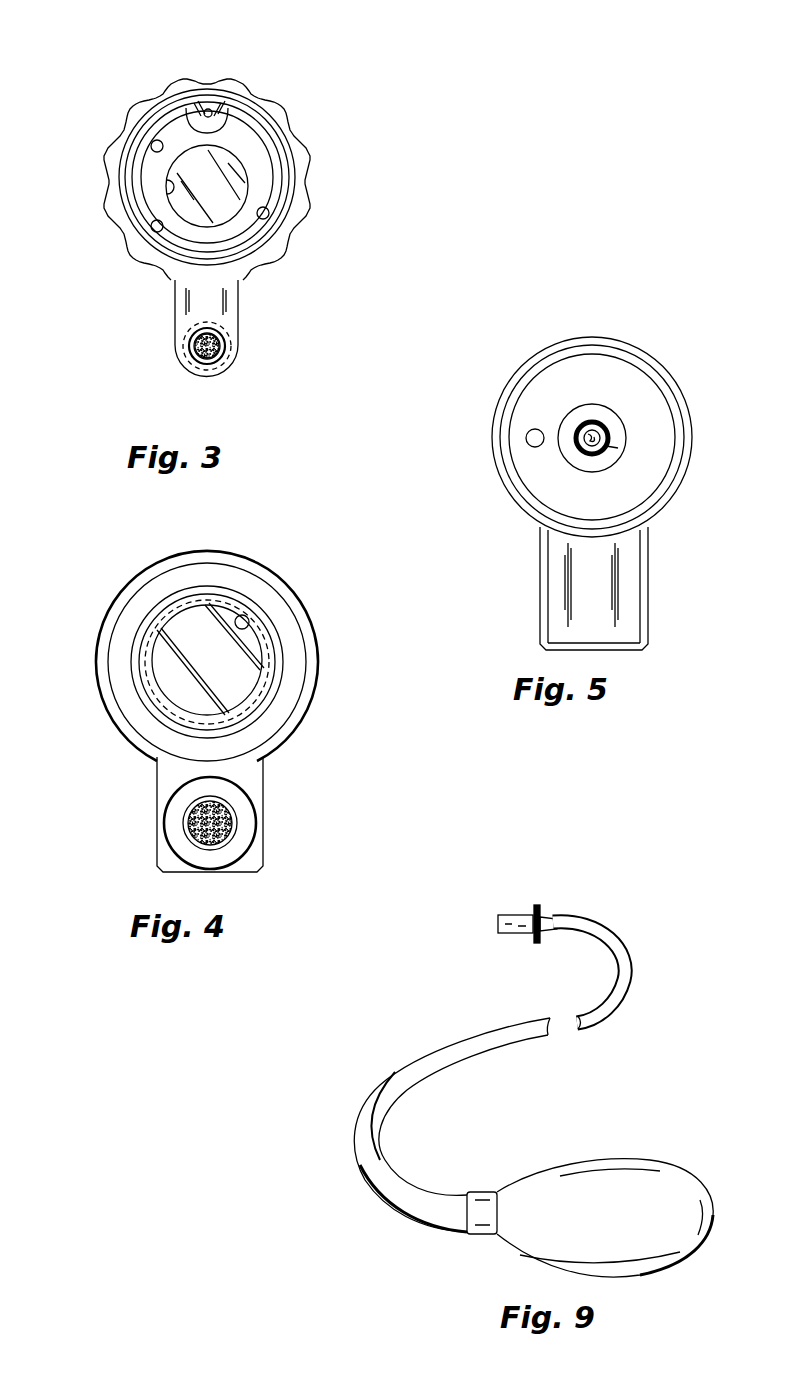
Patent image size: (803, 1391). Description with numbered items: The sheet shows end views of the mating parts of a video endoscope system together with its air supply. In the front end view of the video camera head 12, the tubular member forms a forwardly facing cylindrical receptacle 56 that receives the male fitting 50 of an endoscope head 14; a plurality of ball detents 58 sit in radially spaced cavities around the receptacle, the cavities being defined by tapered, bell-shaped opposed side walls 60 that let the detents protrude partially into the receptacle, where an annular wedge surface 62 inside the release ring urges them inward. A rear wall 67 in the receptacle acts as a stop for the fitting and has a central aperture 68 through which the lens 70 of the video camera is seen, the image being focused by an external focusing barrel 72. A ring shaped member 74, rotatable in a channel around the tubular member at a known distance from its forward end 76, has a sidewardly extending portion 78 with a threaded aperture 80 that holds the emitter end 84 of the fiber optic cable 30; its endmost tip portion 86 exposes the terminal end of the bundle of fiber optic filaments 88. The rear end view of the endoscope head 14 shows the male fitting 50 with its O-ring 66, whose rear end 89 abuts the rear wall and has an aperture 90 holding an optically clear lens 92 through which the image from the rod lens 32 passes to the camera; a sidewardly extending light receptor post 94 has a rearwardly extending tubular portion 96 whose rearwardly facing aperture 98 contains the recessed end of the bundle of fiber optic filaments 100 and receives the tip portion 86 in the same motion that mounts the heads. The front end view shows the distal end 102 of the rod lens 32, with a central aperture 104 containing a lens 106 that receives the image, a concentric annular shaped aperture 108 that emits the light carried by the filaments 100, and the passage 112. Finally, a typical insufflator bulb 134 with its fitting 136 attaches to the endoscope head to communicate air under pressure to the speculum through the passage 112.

In FIG. 3, the video camera head 12 is at (328, 297).
In FIG. 4, the endoscope head 14 is at (400, 767).
In FIG. 5, the endoscope head 14 is at (508, 533).
In FIG. 3, the fiber optic cable 30 is at (206, 372).
In FIG. 5, the rod lens 32 is at (620, 447).
In FIG. 4, the male fitting 50 is at (277, 680).
In FIG. 3, the receptacle 56 is at (153, 153).
In FIG. 3, the ball detents 58 is at (165, 102).
In FIG. 3, the opposed side walls 60 is at (195, 110).
In FIG. 3, the annular wedge surface 62 is at (205, 110).
In FIG. 4, the O-ring 66 is at (285, 668).
In FIG. 3, the rear wall 67 is at (247, 163).
In FIG. 3, the aperture 68 is at (170, 200).
In FIG. 3, the lens 70 is at (228, 167).
In FIG. 3, the external focusing barrel 72 is at (292, 253).
In FIG. 3, the ring shaped member 74 is at (108, 215).
In FIG. 3, the forward end 76 is at (287, 175).
In FIG. 3, the sidewardly extending portion 78 is at (240, 350).
In FIG. 3, the threaded aperture 80 is at (225, 330).
In FIG. 3, the emitter end 84 is at (231, 370).
In FIG. 3, the endmost tip portion 86 is at (190, 358).
In FIG. 3, the bundle of fiber optic filaments 88 is at (187, 343).
In FIG. 4, the rear end 89 is at (220, 596).
In FIG. 4, the aperture 90 is at (248, 627).
In FIG. 4, the optically clear lens 92 is at (178, 630).
In FIG. 4, the light receptor post 94 is at (263, 807).
In FIG. 5, the light receptor post 94 is at (650, 600).
In FIG. 4, the rearwardly extending tubular portion 96 is at (243, 853).
In FIG. 4, the aperture 98 is at (203, 847).
In FIG. 4, the bundle of fiber optic filaments 100 is at (187, 823).
In FIG. 5, the bundle of fiber optic filaments 100 is at (595, 427).
In FIG. 5, the distal end 102 is at (580, 443).
In FIG. 5, the central aperture 104 is at (620, 430).
In FIG. 5, the lens 106 is at (575, 427).
In FIG. 5, the annular shaped aperture 108 is at (577, 433).
In FIG. 5, the passage 112 is at (530, 447).
In FIG. 9, the insufflator bulb 134 is at (498, 1248).
In FIG. 9, the fitting 136 is at (515, 935).